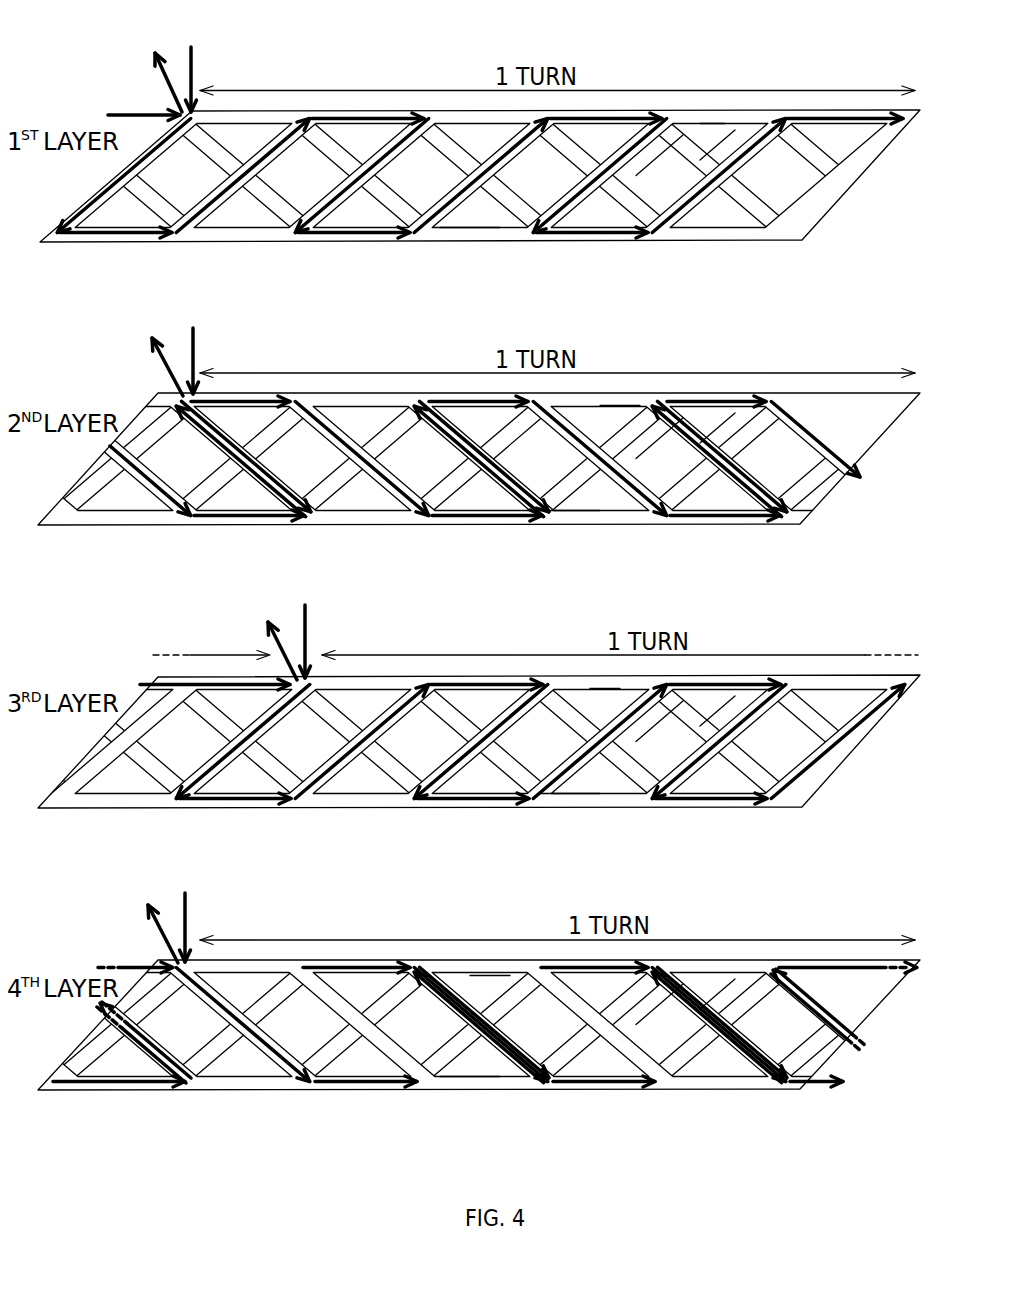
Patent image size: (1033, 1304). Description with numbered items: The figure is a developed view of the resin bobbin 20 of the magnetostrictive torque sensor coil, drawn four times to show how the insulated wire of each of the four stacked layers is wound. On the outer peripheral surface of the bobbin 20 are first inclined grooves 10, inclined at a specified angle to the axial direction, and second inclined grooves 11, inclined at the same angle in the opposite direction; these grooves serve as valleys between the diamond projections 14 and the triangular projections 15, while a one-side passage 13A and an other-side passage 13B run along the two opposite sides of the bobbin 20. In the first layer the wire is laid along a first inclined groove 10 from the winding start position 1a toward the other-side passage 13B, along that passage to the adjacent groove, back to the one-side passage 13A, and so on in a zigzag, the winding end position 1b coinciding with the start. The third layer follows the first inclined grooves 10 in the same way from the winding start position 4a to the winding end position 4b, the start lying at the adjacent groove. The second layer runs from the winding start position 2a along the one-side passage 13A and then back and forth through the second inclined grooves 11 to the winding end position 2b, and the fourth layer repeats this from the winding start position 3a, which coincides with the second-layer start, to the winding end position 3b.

The first inclined groove 10 is at (383, 150).
The second inclined groove 11 is at (445, 147).
The one-side passage 13A is at (708, 117).
The other-side passage 13B is at (483, 234).
The diamond projection 14 is at (660, 168).
The triangular projection 15 is at (722, 142).
The bobbin 20 is at (807, 77).
The winding start position 1a is at (298, 67).
The winding end position 1b is at (152, 74).
The winding start position 2a is at (302, 350).
The winding end position 2b is at (149, 358).
The winding start position 3a is at (294, 916).
The winding end position 3b is at (146, 924).
The winding start position 4a is at (415, 631).
The winding end position 4b is at (264, 639).